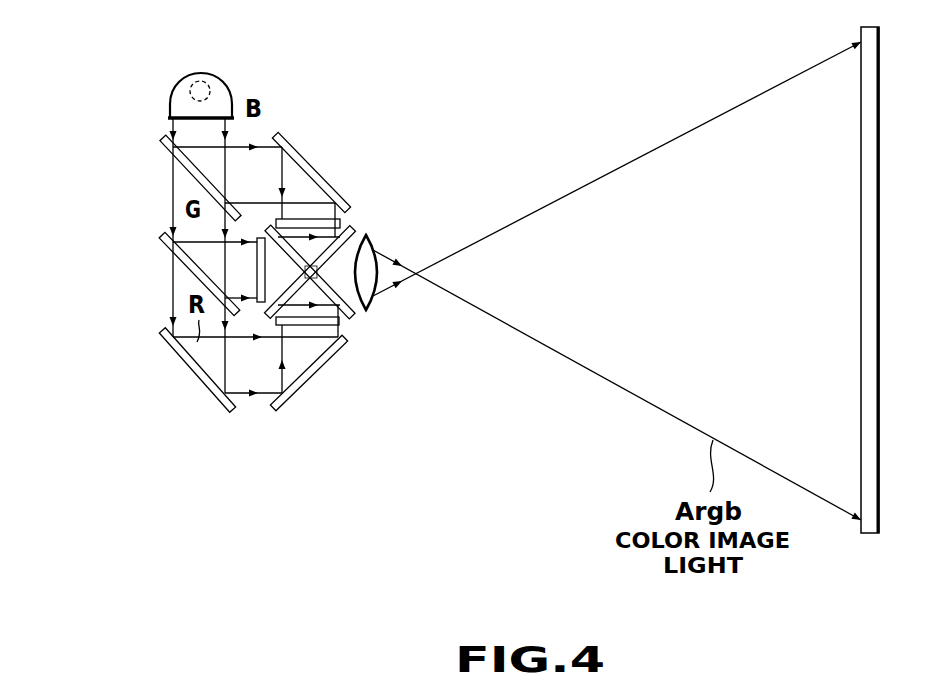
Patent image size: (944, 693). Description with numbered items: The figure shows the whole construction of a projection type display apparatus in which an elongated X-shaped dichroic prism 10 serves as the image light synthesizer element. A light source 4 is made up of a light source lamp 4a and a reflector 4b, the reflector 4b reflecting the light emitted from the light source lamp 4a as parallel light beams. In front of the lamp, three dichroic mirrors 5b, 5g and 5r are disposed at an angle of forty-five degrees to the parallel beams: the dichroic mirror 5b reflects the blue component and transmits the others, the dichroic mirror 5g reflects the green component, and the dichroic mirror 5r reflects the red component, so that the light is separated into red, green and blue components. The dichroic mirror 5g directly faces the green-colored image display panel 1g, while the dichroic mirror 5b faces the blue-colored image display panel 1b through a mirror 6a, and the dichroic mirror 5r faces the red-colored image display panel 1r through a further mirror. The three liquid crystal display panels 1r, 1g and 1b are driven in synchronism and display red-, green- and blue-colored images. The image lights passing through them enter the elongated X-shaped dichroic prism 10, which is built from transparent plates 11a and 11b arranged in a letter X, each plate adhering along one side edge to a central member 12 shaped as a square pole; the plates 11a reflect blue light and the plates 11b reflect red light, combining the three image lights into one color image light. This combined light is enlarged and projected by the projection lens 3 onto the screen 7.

The light source 4 is at (195, 69).
The light source lamp 4a is at (211, 86).
The reflector 4b is at (178, 111).
The dichroic mirror 5b is at (164, 141).
The dichroic mirror 5g is at (163, 243).
The dichroic mirror 5r is at (167, 346).
The mirror 6a is at (290, 143).
The liquid crystal display panel 1b is at (306, 218).
The liquid crystal display panel 1g is at (255, 282).
The liquid crystal display panel 1r is at (309, 327).
The elongated X-shaped dichroic prism 10 is at (378, 326).
The transparent plate 11a is at (272, 226).
The transparent plate 11b is at (352, 230).
The central member 12 is at (420, 204).
The projection lens 3 is at (381, 298).
The screen 7 is at (868, 535).